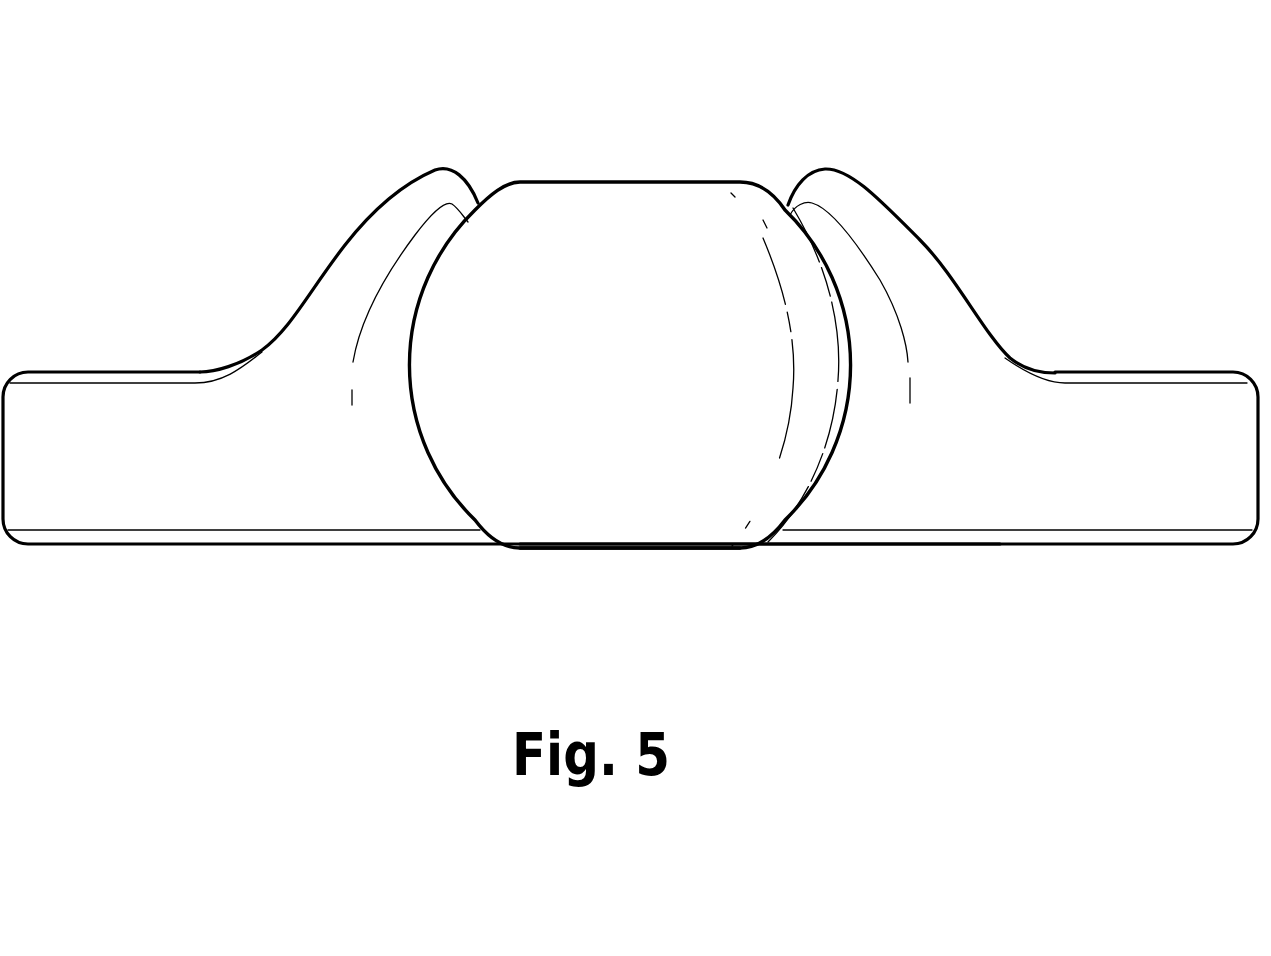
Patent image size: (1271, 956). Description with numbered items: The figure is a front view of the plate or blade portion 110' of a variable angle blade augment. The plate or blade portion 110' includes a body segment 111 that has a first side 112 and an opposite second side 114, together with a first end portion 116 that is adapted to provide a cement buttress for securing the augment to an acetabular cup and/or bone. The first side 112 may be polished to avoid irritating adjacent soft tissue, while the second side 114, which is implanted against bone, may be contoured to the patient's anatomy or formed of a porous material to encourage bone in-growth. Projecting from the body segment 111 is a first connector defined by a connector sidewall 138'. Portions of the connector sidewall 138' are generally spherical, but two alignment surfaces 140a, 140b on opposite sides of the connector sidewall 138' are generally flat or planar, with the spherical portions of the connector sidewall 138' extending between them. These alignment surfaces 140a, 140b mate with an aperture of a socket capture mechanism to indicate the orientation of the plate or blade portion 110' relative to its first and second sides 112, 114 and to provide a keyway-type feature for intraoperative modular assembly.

The plate or blade portion 110' is at (612, 287).
The body segment 111 is at (958, 324).
The first side 112 is at (1123, 372).
The second side 114 is at (907, 548).
The first end portion 116 is at (1092, 503).
The connector sidewall 138' is at (785, 307).
The alignment surface 140a is at (624, 182).
The alignment surface 140b is at (607, 548).